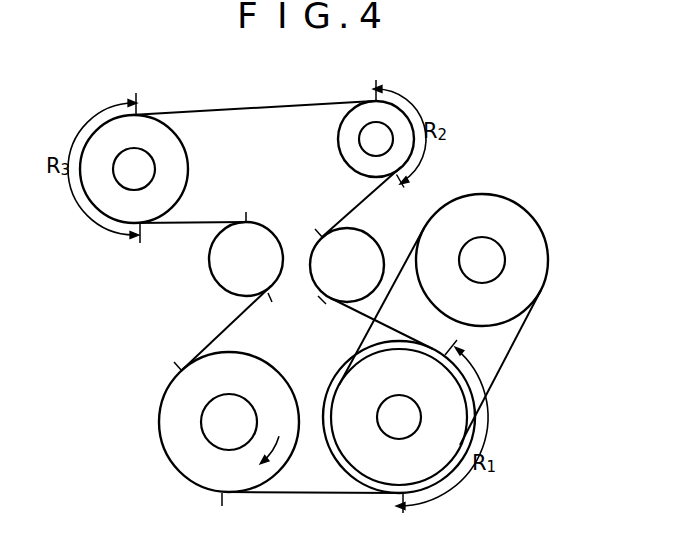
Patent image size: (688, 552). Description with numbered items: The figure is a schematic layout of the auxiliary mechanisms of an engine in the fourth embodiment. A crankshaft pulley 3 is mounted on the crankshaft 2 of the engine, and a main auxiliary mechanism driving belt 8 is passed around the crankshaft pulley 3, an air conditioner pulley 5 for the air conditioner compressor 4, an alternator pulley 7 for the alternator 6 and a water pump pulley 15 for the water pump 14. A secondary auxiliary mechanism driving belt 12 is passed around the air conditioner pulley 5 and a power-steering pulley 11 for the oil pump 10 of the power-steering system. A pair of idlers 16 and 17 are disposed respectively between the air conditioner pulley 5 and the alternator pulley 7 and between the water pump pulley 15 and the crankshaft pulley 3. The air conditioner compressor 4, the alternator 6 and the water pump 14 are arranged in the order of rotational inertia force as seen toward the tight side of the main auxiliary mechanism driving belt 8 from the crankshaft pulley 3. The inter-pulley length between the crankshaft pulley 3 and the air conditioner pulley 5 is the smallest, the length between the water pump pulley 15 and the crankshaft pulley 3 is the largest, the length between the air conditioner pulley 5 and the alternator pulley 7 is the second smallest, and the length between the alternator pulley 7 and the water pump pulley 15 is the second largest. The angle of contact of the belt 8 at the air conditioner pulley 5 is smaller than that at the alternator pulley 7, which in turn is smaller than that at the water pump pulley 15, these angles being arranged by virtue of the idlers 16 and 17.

The crankshaft 2 is at (228, 405).
The crankshaft pulley 3 is at (260, 370).
The air conditioner compressor 4 is at (403, 402).
The air conditioner pulley 5 is at (337, 380).
The alternator 6 is at (372, 148).
The alternator pulley 7 is at (345, 122).
The main auxiliary mechanism driving belt 8 is at (252, 109).
The oil pump 10 is at (492, 268).
The power-steering pulley 11 is at (530, 238).
The secondary auxiliary mechanism driving belt 12 is at (506, 356).
The water pump 14 is at (145, 173).
The water pump pulley 15 is at (167, 137).
The idler 16 is at (338, 248).
The idler 17 is at (225, 265).